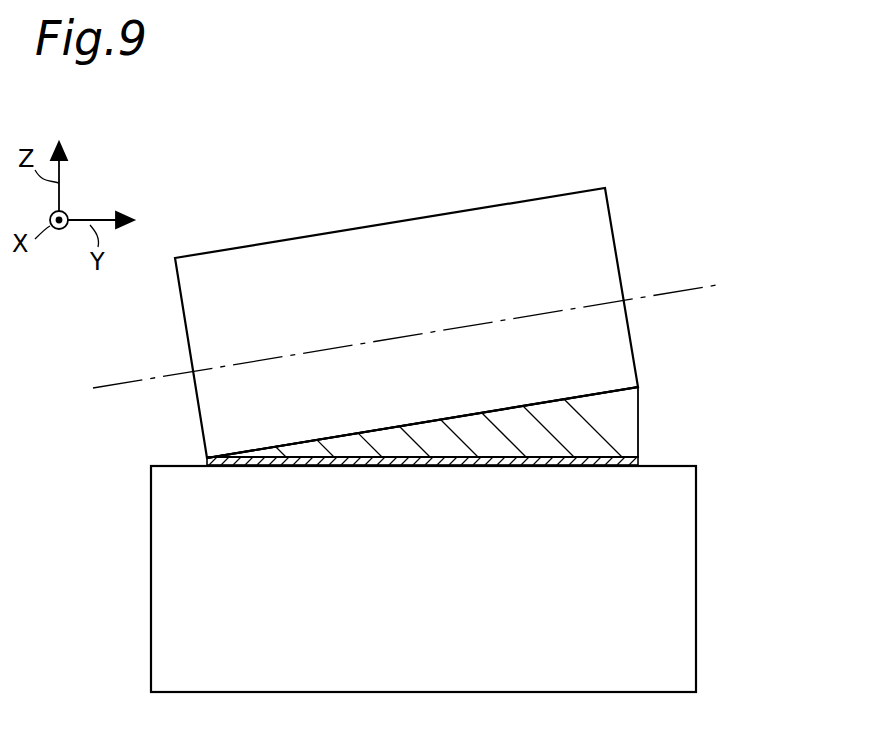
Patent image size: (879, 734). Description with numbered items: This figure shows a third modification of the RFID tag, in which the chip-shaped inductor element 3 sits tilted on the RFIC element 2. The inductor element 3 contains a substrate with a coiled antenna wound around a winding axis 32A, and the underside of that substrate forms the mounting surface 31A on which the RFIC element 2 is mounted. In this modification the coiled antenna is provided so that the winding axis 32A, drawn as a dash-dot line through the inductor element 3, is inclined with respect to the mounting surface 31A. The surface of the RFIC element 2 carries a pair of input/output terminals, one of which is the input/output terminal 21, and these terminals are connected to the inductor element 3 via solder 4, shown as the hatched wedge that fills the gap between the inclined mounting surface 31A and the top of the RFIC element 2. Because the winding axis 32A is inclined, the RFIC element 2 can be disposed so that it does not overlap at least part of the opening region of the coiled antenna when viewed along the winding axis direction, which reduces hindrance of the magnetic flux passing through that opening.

The RFIC element 2 is at (674, 575).
The input/output terminal 21 is at (403, 465).
The inductor element 3 is at (592, 225).
The mounting surface 31A is at (615, 398).
The winding axis 32A is at (707, 283).
The solder 4 is at (625, 433).